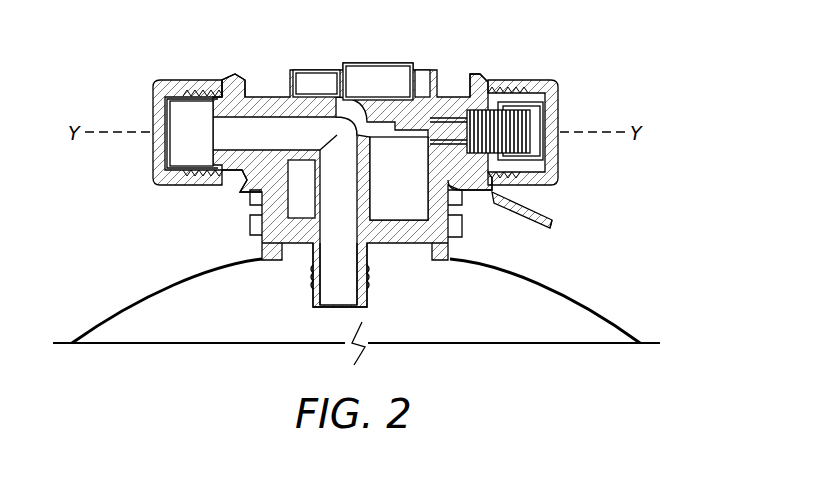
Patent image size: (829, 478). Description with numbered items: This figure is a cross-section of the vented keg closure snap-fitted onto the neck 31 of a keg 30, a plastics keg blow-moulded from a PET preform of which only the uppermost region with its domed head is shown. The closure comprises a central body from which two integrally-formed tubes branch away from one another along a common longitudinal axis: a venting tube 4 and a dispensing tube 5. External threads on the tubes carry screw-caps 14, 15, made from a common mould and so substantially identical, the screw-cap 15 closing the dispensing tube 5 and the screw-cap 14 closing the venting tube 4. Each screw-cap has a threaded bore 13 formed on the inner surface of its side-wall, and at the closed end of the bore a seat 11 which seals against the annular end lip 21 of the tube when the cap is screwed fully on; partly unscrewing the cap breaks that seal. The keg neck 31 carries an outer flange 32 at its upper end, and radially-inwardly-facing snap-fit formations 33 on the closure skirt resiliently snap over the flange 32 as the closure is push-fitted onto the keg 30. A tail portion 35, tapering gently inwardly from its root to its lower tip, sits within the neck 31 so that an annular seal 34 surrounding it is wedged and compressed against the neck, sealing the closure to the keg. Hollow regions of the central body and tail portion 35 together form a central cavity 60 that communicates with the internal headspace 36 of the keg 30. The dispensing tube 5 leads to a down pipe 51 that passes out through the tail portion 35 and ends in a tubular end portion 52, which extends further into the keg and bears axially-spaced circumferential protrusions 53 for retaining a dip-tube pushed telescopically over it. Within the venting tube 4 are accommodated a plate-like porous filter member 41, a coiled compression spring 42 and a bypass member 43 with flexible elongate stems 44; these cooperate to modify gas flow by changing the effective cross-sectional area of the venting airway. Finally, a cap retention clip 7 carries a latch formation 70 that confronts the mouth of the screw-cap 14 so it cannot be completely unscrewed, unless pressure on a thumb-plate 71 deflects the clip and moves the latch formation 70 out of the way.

The venting tube 4 is at (457, 100).
The dispensing tube 5 is at (232, 105).
The cap retention clip 7 is at (520, 205).
The seat 11 is at (167, 147).
The threaded bore 13 is at (245, 92).
The screw-cap 14 is at (542, 76).
The screw-cap 15 is at (152, 80).
The annular end lip 21 is at (163, 98).
The keg 30 is at (110, 286).
The neck 31 is at (277, 250).
The outer flange 32 is at (257, 203).
The snap-fit formations 33 is at (257, 222).
The annular seal 34 is at (279, 196).
The tail portion 35 is at (287, 192).
The internal headspace 36 is at (460, 332).
The porous filter member 41 is at (527, 120).
The coiled compression spring 42 is at (528, 142).
The bypass member 43 is at (513, 105).
The flexible elongate stems 44 is at (405, 130).
The down pipe 51 is at (342, 153).
The tubular end portion 52 is at (340, 308).
The circumferential protrusions 53 is at (365, 270).
The central cavity 60 is at (403, 200).
The latch formation 70 is at (498, 193).
The thumb-plate 71 is at (540, 210).